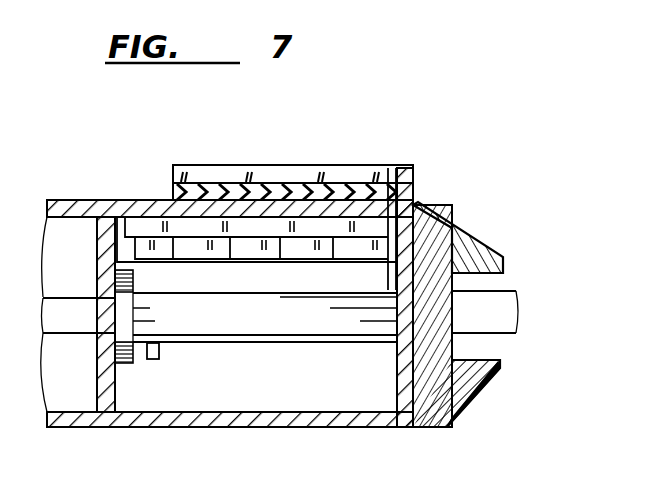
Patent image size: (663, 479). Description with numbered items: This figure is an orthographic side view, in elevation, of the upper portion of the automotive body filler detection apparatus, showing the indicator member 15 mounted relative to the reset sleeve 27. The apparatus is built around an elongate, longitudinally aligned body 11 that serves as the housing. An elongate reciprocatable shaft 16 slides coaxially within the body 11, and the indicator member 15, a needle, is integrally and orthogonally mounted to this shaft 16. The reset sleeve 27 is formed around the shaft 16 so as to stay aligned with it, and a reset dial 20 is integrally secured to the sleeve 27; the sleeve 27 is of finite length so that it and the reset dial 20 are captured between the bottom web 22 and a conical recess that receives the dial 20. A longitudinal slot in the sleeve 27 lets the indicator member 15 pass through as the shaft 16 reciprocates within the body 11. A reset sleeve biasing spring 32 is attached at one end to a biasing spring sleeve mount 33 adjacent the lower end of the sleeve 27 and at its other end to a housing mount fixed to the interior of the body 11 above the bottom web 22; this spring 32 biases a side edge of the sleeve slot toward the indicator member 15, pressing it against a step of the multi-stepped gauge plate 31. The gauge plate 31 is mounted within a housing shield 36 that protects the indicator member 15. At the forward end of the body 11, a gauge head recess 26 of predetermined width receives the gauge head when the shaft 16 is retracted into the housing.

The body 11 is at (92, 200).
The indicator member 15 is at (413, 205).
The shaft 16 is at (67, 293).
The reset dial 20 is at (455, 314).
The bottom web 22 is at (110, 391).
The gauge head recess 26 is at (480, 350).
The reset sleeve 27 is at (296, 317).
The multi-stepped gauge plate 31 is at (243, 248).
The reset sleeve biasing spring 32 is at (152, 255).
The biasing spring sleeve mount 33 is at (160, 352).
The housing shield 36 is at (297, 165).